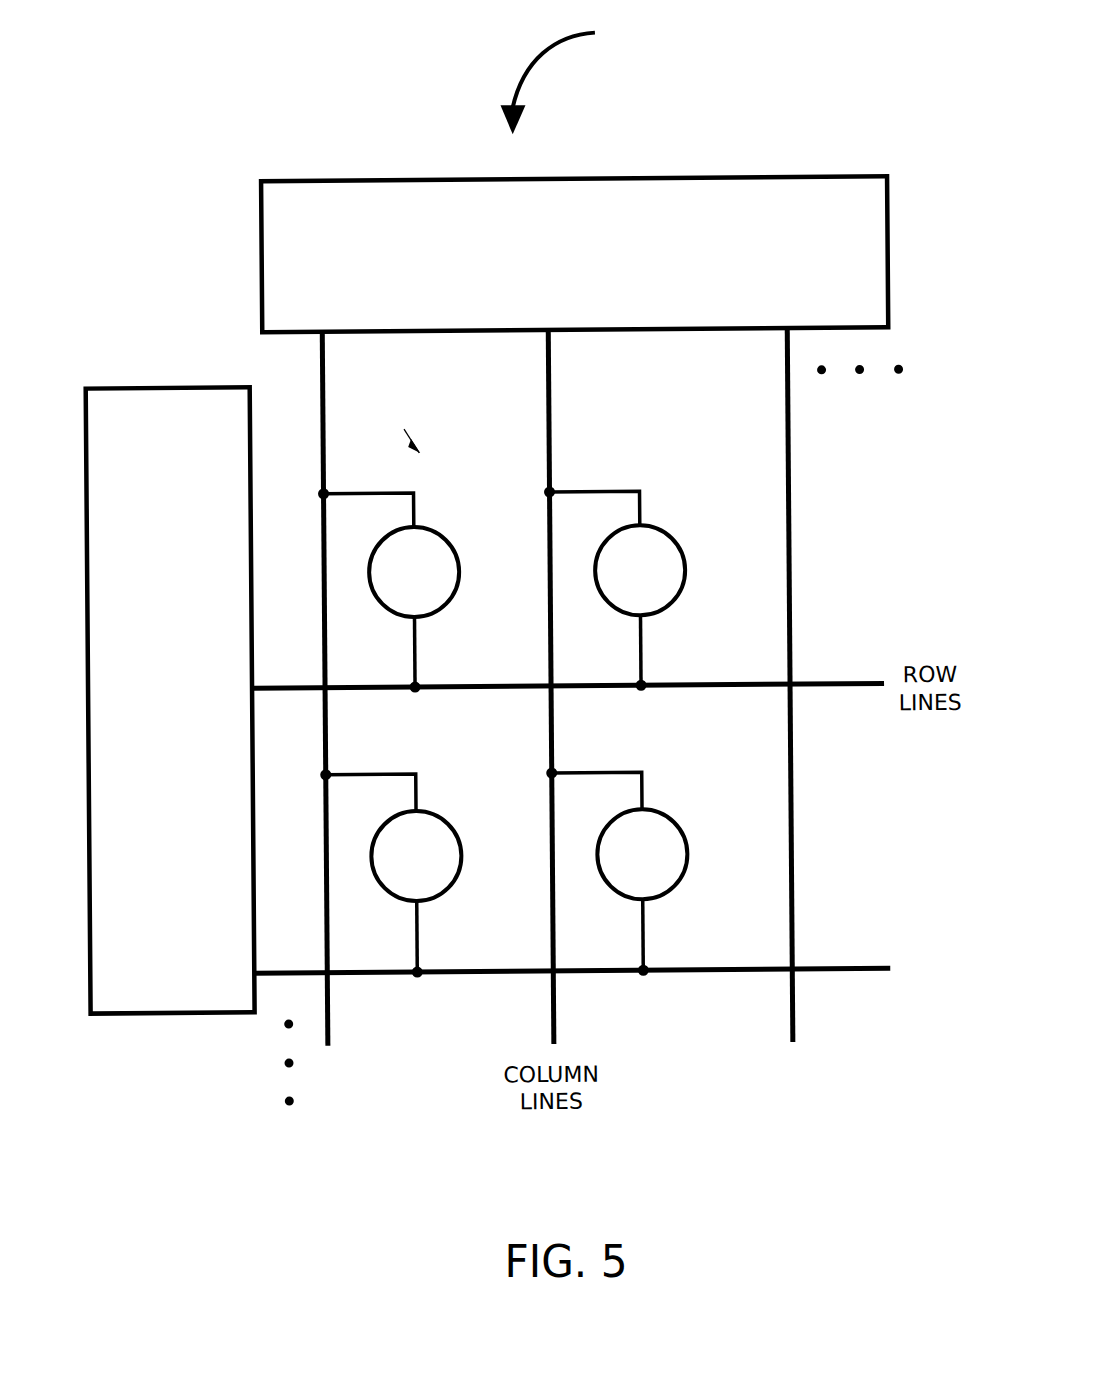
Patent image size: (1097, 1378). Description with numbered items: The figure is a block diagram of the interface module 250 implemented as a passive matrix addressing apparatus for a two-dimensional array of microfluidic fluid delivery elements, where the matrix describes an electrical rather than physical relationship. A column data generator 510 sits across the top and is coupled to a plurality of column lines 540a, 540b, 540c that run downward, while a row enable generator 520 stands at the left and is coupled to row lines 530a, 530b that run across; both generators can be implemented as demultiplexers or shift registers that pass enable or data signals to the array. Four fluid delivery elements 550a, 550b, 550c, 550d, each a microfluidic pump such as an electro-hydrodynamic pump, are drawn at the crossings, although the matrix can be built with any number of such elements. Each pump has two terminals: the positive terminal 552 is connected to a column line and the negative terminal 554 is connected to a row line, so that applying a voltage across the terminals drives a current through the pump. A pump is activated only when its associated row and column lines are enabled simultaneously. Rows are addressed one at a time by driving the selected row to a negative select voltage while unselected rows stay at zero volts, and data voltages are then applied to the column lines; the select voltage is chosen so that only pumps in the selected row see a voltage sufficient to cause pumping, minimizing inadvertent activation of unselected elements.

The interface module 250 is at (576, 77).
The column data generator 510 is at (574, 254).
The row enable generator 520 is at (170, 700).
The row line 530a is at (823, 690).
The row line 530b is at (822, 975).
The column line 540a is at (331, 1018).
The column line 540b is at (558, 1024).
The column line 540c is at (785, 1021).
The fluid delivery element 550a is at (456, 558).
The fluid delivery element 550b is at (459, 853).
The fluid delivery element 550c is at (684, 565).
The fluid delivery element 550d is at (686, 846).
The terminal 552 is at (416, 488).
The terminal 554 is at (418, 675).